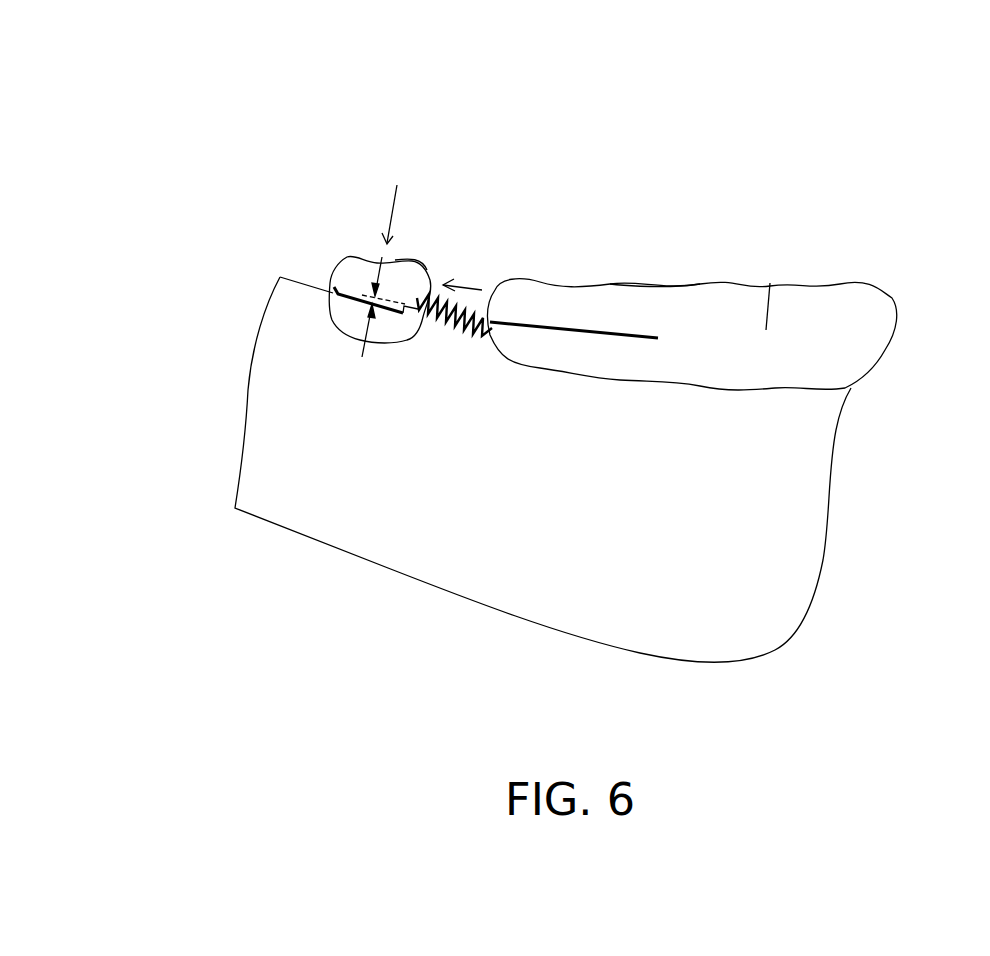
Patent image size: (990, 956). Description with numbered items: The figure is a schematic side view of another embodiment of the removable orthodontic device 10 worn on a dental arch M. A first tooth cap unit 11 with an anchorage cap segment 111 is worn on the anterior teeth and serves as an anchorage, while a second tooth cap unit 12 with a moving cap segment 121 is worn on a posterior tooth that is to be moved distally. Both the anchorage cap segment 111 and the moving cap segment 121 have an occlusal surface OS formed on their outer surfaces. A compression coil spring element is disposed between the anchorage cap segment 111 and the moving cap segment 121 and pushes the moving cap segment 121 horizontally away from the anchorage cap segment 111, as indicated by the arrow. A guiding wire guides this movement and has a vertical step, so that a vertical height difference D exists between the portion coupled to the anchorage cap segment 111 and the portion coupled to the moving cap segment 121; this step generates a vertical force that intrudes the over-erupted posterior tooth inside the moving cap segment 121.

The removable orthodontic device 10 is at (181, 81).
The first tooth cap unit 11 is at (858, 232).
The anchorage cap segment 111 is at (766, 333).
The second tooth cap unit 12 is at (348, 230).
The moving cap segment 121 is at (353, 272).
The occlusal surface OS is at (642, 283).
The vertical height difference D is at (367, 324).
The dental arch M is at (830, 540).